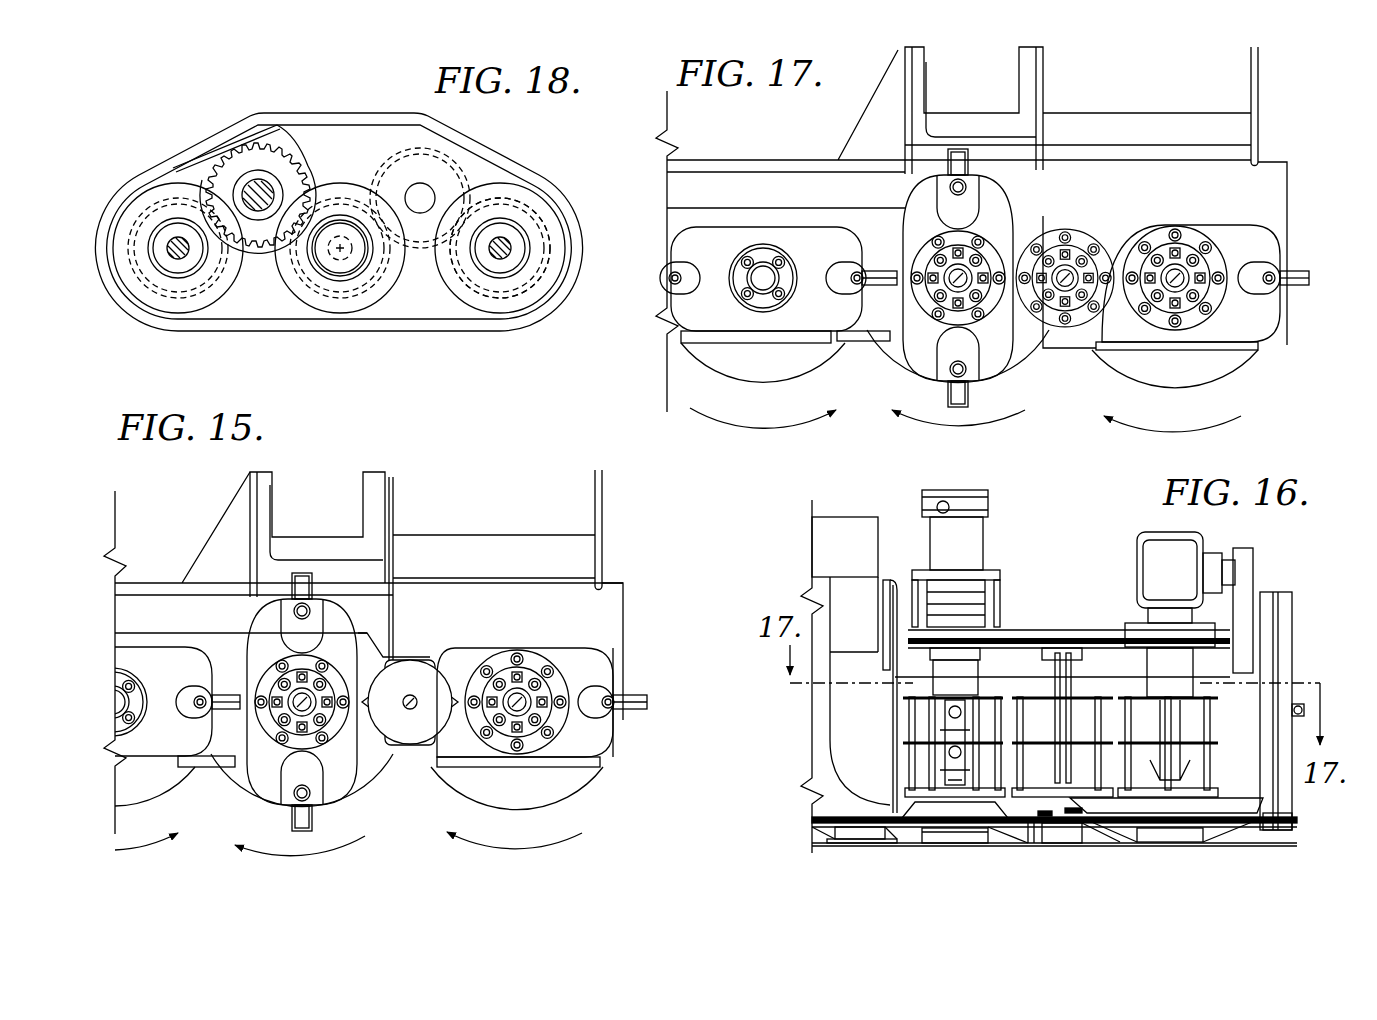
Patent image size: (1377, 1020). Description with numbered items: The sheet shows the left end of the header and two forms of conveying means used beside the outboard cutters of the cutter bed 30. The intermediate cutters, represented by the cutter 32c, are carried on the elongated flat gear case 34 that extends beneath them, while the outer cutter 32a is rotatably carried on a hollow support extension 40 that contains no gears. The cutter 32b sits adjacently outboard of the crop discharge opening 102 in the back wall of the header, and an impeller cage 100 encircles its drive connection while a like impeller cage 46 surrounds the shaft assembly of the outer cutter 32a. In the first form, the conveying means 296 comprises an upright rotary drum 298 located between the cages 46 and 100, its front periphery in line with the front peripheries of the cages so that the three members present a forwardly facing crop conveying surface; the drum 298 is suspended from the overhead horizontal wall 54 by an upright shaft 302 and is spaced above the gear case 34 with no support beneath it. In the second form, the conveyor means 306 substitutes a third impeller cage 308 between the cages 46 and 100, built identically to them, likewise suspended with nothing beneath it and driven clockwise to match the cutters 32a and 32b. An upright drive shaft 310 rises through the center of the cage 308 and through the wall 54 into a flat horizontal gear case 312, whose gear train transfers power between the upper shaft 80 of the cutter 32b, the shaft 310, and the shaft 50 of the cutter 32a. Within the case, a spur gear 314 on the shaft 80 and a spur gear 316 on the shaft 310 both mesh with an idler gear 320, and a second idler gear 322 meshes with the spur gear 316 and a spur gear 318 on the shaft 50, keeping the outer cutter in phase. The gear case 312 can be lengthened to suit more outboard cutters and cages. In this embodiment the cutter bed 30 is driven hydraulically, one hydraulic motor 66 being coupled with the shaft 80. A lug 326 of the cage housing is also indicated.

In FIG. 15, the cutter bed 30 is at (628, 631).
In FIG. 17, the cutter bed 30 is at (1298, 237).
In FIG. 16, the cutter bed 30 is at (1265, 843).
In FIG. 17, the outer rotary cutter 32a is at (1241, 255).
In FIG. 16, the outer rotary cutter 32a is at (1203, 804).
In FIG. 16, the rotary cutter 32b is at (927, 804).
In FIG. 15, the rotary cutter 32c is at (157, 733).
In FIG. 17, the rotary cutter 32c is at (712, 317).
In FIG. 15, the gear case 34 is at (216, 744).
In FIG. 17, the gear case 34 is at (878, 311).
In FIG. 16, the gear case 34 is at (853, 847).
In FIG. 15, the support extension 40 is at (563, 763).
In FIG. 17, the support extension 40 is at (1228, 346).
In FIG. 16, the support extension 40 is at (1088, 828).
In FIG. 15, the impeller cage 46 is at (567, 738).
In FIG. 17, the impeller cage 46 is at (1214, 240).
In FIG. 16, the impeller cage 46 is at (1220, 732).
In FIG. 18, the shaft 50 is at (506, 260).
In FIG. 16, the horizontal wall 54 is at (1118, 668).
In FIG. 16, the hydraulic motor 66 is at (968, 541).
In FIG. 18, the upper shaft 80 is at (181, 258).
In FIG. 15, the impeller cage 100 is at (277, 745).
In FIG. 17, the impeller cage 100 is at (932, 333).
In FIG. 16, the impeller cage 100 is at (1008, 768).
In FIG. 15, the crop discharge opening 102 is at (363, 652).
In FIG. 17, the crop discharge opening 102 is at (957, 229).
In FIG. 16, the crop discharge opening 102 is at (860, 800).
In FIG. 15, the conveying means 296 is at (445, 632).
In FIG. 15, the rotary drum 298 is at (404, 747).
In FIG. 15, the upright shaft 302 is at (406, 694).
In FIG. 17, the conveyor means 306 is at (1086, 214).
In FIG. 16, the conveyor means 306 is at (1084, 682).
In FIG. 17, the third impeller cage 308 is at (1064, 224).
In FIG. 16, the third impeller cage 308 is at (1042, 700).
In FIG. 18, the upright drive shaft 310 is at (345, 262).
In FIG. 17, the upright drive shaft 310 is at (1077, 284).
In FIG. 16, the upright drive shaft 310 is at (1033, 660).
In FIG. 18, the gear case 312 is at (154, 140).
In FIG. 16, the gear case 312 is at (1063, 603).
In FIG. 18, the spur gear 314 is at (202, 180).
In FIG. 18, the spur gear 316 is at (323, 294).
In FIG. 18, the spur gear 318 is at (484, 292).
In FIG. 18, the idler gear 320 is at (262, 152).
In FIG. 18, the second idler gear 322 is at (445, 176).
In FIG. 17, the lug 326 is at (985, 367).